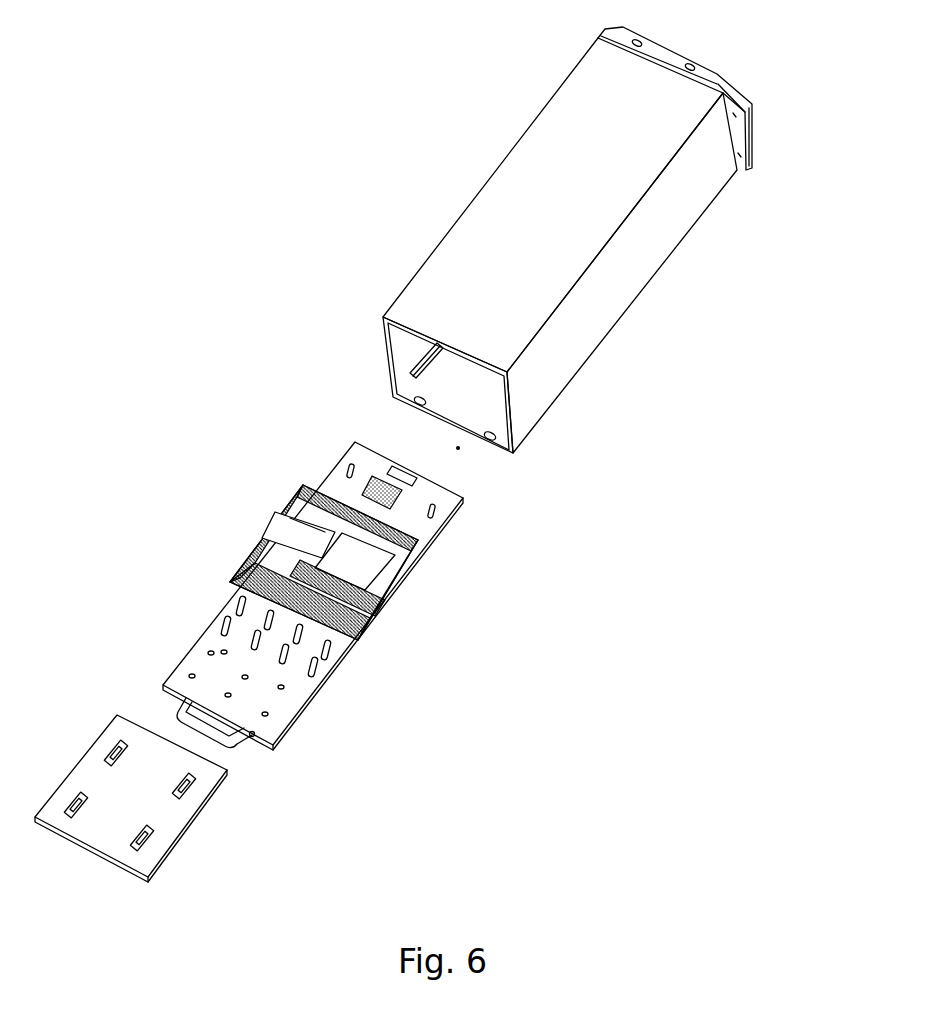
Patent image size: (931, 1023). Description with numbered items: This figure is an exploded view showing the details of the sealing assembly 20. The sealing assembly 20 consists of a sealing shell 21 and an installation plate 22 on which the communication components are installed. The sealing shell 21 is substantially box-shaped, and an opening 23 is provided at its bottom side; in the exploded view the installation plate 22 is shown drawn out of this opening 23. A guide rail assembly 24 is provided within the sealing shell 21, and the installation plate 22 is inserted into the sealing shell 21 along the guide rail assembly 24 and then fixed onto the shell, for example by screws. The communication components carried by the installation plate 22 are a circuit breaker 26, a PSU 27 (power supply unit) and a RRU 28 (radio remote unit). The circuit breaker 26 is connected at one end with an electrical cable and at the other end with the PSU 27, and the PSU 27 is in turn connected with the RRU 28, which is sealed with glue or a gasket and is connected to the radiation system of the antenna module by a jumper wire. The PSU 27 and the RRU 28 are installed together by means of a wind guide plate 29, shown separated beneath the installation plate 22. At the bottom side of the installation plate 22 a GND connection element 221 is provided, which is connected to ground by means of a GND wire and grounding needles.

The sealing assembly 20 is at (212, 247).
The sealing shell 21 is at (615, 275).
The installation plate 22 is at (200, 640).
The GND connection element 221 is at (317, 667).
The opening 23 is at (442, 388).
The guide rail assembly 24 is at (413, 350).
The circuit breaker 26 is at (370, 492).
The PSU (power supply unit) 27 is at (275, 509).
The RRU (radio remote unit) 28 is at (387, 590).
The wind guide plate 29 is at (183, 807).